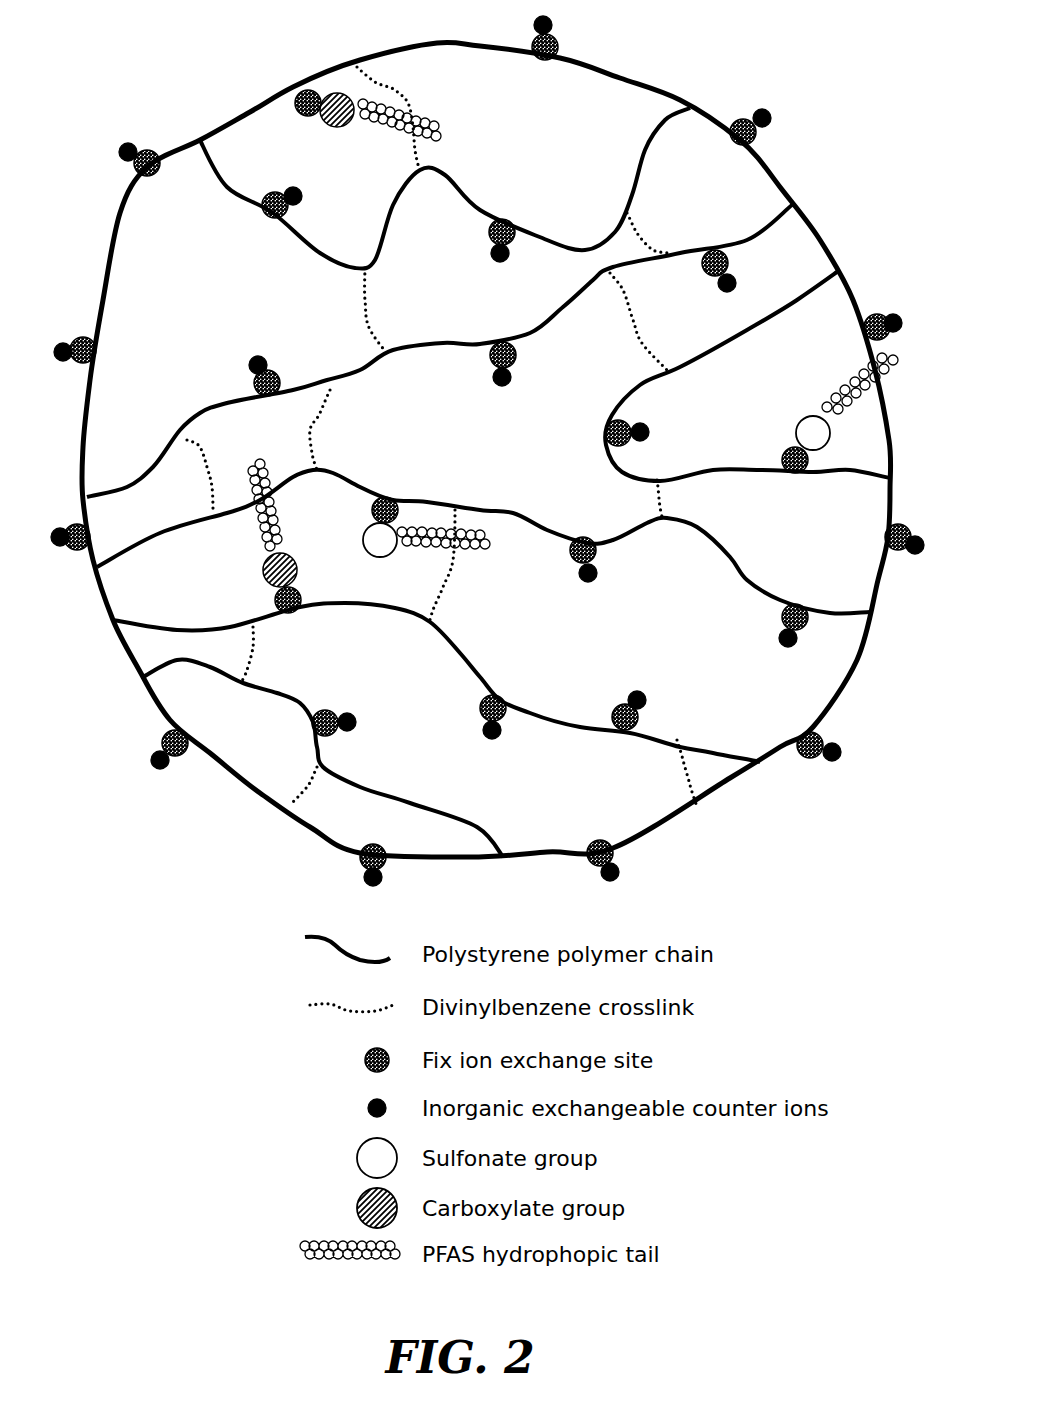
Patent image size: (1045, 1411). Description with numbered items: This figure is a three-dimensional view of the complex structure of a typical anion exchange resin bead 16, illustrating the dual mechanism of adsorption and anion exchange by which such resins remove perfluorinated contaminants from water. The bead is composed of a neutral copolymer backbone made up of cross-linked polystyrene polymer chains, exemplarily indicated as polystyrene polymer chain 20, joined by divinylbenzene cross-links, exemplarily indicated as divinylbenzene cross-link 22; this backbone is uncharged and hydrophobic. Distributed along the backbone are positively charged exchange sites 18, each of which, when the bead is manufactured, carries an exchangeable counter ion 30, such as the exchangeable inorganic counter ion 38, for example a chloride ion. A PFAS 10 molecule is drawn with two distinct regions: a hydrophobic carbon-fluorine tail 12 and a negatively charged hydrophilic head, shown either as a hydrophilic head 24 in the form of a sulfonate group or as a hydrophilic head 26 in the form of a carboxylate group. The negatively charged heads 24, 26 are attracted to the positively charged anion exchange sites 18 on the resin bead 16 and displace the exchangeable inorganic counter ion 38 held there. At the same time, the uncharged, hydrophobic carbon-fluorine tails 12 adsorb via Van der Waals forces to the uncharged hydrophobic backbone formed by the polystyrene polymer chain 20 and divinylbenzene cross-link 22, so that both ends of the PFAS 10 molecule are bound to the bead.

The PFAS 10 is at (358, 137).
The hydrophobic carbon-fluorine tail 12 is at (393, 135).
The anion exchange resin bead 16 is at (707, 76).
The positively charged exchange sites 18 is at (96, 348).
The polystyrene polymer chain 20 is at (298, 390).
The divinylbenzene cross-link 22 is at (403, 93).
The hydrophilic head (sulfonate group) 24 is at (337, 93).
The hydrophilic head (carboxylate group) 26 is at (365, 538).
The exchangeable counter ion 30 is at (833, 762).
The exchangeable inorganic counter ion 38 is at (62, 342).